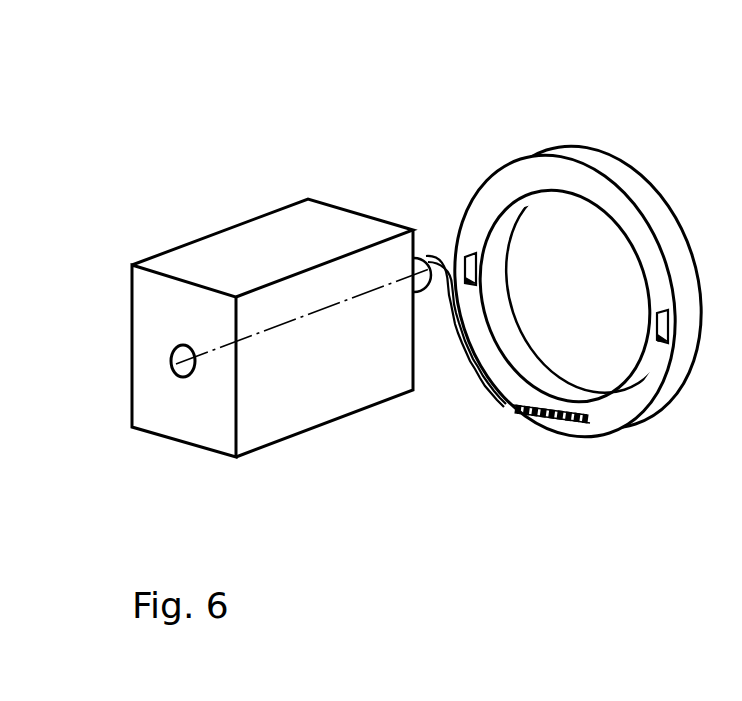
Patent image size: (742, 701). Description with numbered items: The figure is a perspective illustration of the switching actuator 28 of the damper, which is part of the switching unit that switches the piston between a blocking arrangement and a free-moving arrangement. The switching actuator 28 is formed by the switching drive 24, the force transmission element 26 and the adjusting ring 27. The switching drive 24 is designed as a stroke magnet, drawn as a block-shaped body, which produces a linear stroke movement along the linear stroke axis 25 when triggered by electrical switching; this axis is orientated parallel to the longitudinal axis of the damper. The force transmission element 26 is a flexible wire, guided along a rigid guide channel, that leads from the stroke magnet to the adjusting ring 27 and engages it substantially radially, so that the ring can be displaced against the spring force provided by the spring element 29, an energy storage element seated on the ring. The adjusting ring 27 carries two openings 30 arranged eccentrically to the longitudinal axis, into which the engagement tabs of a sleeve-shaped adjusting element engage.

The switching drive 24 is at (283, 428).
The linear stroke axis 25 is at (148, 373).
The force transmission element 26 is at (440, 262).
The adjusting ring 27 is at (583, 182).
The switching actuator 28 is at (445, 441).
The spring element 29 is at (558, 421).
The openings 30 is at (470, 253).